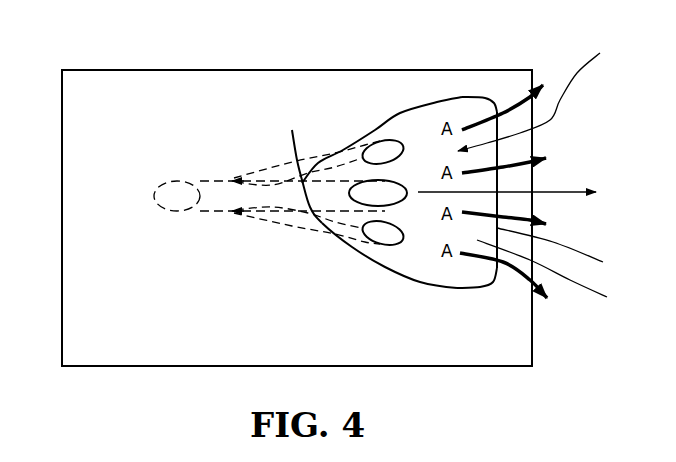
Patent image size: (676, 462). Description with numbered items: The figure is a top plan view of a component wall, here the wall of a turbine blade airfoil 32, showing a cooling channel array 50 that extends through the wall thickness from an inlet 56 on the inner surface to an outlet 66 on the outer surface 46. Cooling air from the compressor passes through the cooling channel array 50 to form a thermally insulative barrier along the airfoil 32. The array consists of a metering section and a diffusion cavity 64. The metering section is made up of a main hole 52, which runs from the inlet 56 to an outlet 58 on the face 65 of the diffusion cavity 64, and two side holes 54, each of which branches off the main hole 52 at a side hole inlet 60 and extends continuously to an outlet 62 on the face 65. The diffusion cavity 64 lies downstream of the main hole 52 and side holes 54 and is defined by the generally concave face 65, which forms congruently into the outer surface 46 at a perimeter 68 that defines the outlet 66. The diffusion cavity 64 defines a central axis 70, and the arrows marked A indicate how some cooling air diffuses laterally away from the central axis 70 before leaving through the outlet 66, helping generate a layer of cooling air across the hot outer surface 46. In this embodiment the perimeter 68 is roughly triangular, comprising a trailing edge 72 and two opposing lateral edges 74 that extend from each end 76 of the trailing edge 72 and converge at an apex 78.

The turbine blade airfoil 32 is at (113, 326).
The outer surface 46 is at (178, 92).
The cooling channel array 50 is at (543, 96).
The main hole 52 is at (217, 200).
The side hole 54 is at (343, 147).
The inlet 56 is at (177, 200).
The main hole outlet 58 is at (454, 195).
The side hole inlet 60 is at (265, 172).
The side hole outlet 62 is at (387, 148).
The diffusion cavity 64 is at (462, 97).
The diffusion cavity face 65 is at (554, 274).
The outlet 66 is at (417, 280).
The perimeter 68 is at (460, 288).
The central axis 70 is at (525, 190).
The trailing edge 72 is at (563, 251).
The lateral edge 74 is at (362, 132).
The end of trailing edge 76 is at (492, 107).
The apex 78 is at (301, 166).